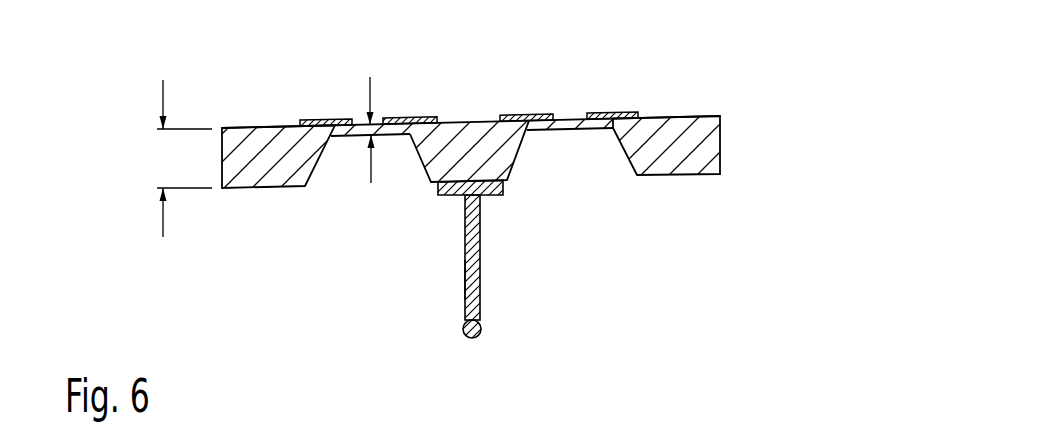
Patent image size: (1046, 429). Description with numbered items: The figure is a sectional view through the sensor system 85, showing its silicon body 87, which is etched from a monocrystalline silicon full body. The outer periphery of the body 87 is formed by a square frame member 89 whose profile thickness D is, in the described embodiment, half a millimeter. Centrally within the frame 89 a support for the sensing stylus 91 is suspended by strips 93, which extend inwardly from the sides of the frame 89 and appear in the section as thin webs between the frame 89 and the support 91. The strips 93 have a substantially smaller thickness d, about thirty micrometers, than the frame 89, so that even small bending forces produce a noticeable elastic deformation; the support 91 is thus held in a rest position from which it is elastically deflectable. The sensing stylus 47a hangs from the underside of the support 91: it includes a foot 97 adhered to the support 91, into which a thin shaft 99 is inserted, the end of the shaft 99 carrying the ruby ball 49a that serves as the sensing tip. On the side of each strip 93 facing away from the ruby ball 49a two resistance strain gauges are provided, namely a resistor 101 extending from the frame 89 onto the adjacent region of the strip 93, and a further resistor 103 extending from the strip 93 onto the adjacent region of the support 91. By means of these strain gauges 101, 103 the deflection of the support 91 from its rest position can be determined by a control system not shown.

The sensor system 85 is at (781, 89).
The body 87 is at (726, 144).
The frame member 89 is at (262, 190).
The support for the sensing stylus 91 is at (430, 167).
The strips 93 is at (347, 137).
The foot 97 is at (503, 188).
The shaft 99 is at (466, 277).
The resistor 101 is at (327, 120).
The further resistor 103 is at (426, 118).
The sensing stylus 47a is at (479, 234).
The ruby ball 49a is at (481, 331).